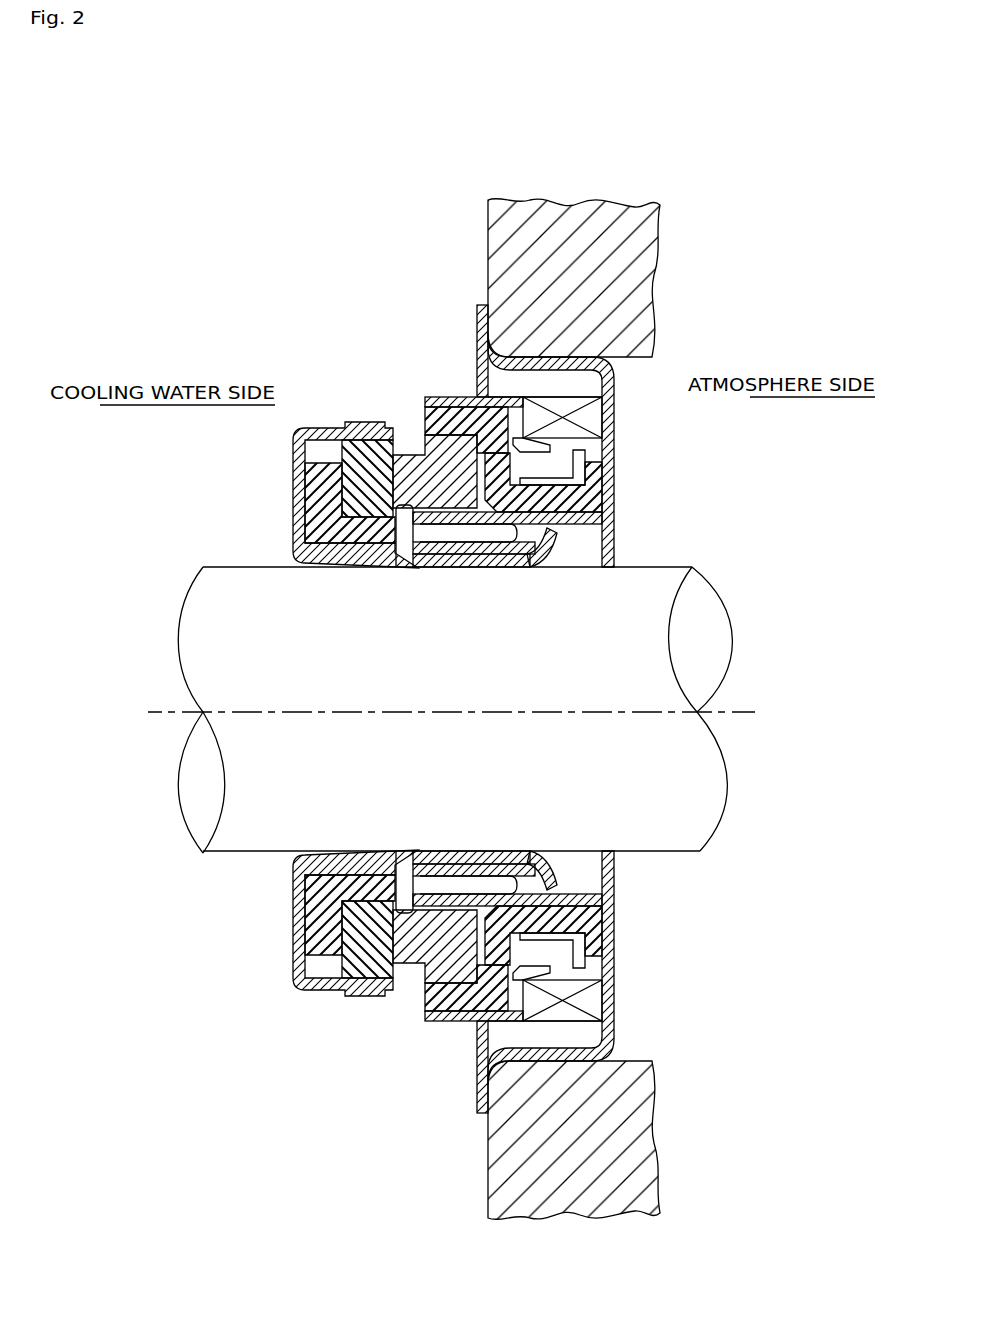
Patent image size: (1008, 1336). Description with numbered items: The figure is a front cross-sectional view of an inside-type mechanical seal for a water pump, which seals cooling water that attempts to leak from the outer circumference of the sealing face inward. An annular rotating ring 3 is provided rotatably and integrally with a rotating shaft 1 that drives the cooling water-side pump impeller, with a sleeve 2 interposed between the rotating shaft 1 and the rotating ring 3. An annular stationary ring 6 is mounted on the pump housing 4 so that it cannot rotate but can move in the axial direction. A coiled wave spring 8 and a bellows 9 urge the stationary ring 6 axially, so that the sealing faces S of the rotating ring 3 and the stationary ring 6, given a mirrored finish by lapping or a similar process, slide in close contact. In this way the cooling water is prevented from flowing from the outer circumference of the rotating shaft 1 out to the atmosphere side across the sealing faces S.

The rotating shaft 1 is at (347, 676).
The sleeve 2 is at (300, 495).
The rotating ring 3 is at (342, 445).
The pump housing 4 is at (560, 228).
The stationary ring 6 is at (420, 455).
The coiled wave spring 8 is at (590, 422).
The bellows 9 is at (485, 428).
The sealing faces S is at (403, 505).